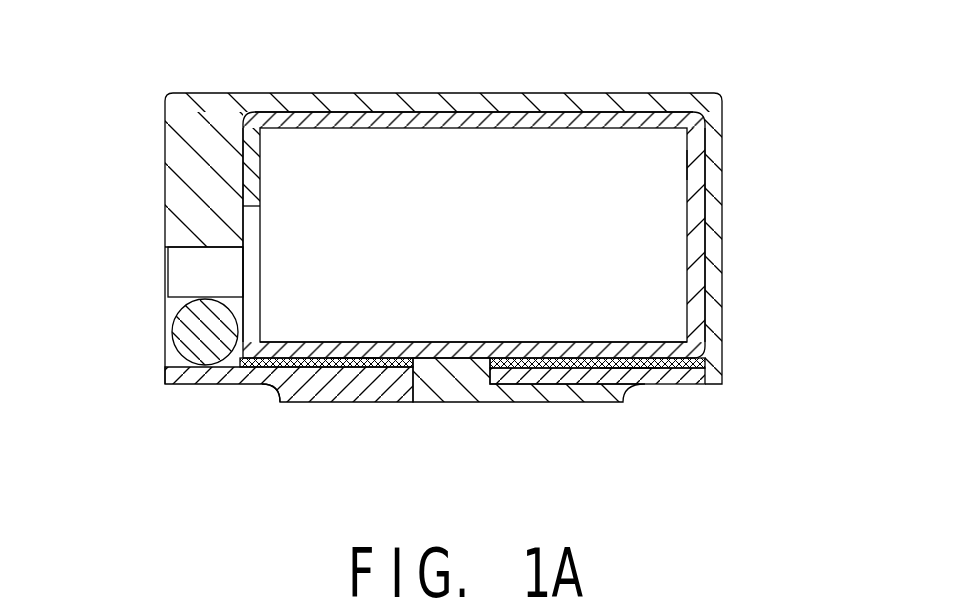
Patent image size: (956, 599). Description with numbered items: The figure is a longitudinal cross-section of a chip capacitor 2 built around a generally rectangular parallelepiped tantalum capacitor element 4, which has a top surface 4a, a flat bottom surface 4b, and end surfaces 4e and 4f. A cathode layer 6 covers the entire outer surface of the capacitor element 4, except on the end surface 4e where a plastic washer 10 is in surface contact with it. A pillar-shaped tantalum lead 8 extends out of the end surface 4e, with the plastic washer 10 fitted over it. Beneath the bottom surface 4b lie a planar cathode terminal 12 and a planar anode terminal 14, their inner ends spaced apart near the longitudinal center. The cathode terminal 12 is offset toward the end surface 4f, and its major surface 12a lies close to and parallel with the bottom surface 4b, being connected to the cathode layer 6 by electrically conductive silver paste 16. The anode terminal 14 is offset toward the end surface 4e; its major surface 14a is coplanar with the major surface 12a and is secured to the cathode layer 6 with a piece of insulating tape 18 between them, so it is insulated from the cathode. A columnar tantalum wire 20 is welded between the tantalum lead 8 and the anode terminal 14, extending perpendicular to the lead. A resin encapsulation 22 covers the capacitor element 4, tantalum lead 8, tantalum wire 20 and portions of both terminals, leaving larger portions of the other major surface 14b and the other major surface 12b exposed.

The chip capacitor 2 is at (453, 74).
The encapsulation 22 is at (218, 106).
The tantalum capacitor element 4 is at (643, 283).
The top surface 4a is at (527, 130).
The bottom surface 4b is at (603, 322).
The end surface 4e is at (258, 152).
The end surface 4f is at (688, 205).
The cathode layer 6 is at (690, 165).
The plastic washer 10 is at (257, 256).
The tantalum lead 8 is at (190, 275).
The tantalum wire 20 is at (195, 330).
The anode terminal 14 is at (321, 390).
The major surface 14a is at (383, 372).
The other major surface 14b is at (283, 403).
The insulating tape 18 is at (356, 363).
The silver paste 16 is at (569, 366).
The cathode terminal 12 is at (606, 382).
The major surface 12a is at (703, 375).
The other major surface 12b is at (628, 386).